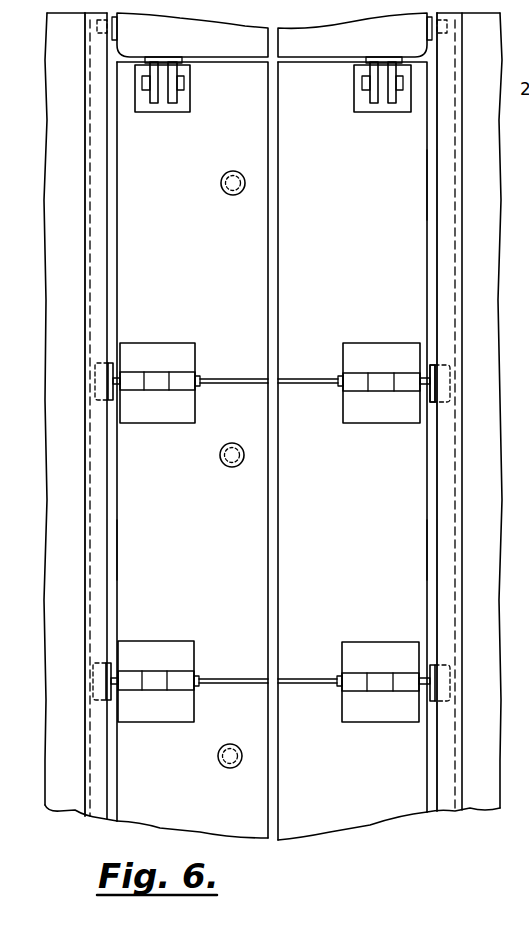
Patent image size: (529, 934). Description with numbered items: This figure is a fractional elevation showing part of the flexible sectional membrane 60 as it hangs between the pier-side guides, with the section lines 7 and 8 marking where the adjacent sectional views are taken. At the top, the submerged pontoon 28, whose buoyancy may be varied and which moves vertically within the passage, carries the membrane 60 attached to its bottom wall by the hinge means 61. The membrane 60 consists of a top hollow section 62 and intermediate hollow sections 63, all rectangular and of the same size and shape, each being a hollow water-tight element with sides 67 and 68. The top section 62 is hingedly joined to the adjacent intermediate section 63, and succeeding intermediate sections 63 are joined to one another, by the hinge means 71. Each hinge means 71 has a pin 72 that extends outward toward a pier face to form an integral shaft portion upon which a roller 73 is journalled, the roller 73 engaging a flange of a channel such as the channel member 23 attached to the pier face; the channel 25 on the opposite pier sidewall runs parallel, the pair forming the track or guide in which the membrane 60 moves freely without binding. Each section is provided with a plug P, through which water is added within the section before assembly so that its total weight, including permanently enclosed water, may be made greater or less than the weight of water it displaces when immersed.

The section line 7- 7 is at (321, 863).
The section line 8- 8 is at (20, 483).
The channel member 23 is at (455, 770).
The channel 25 is at (86, 769).
The submerged pontoon 28 is at (228, 47).
The flexible sectional membrane 60 is at (418, 186).
The hinge means 61 is at (180, 107).
The top hollow section 62 is at (398, 219).
The intermediate hollow section 63 is at (245, 588).
The side 67 is at (425, 549).
The side 68 is at (113, 550).
The hinge means 71 is at (161, 379).
The pin 72 is at (199, 377).
The roller 73 is at (433, 404).
The plug P is at (221, 185).